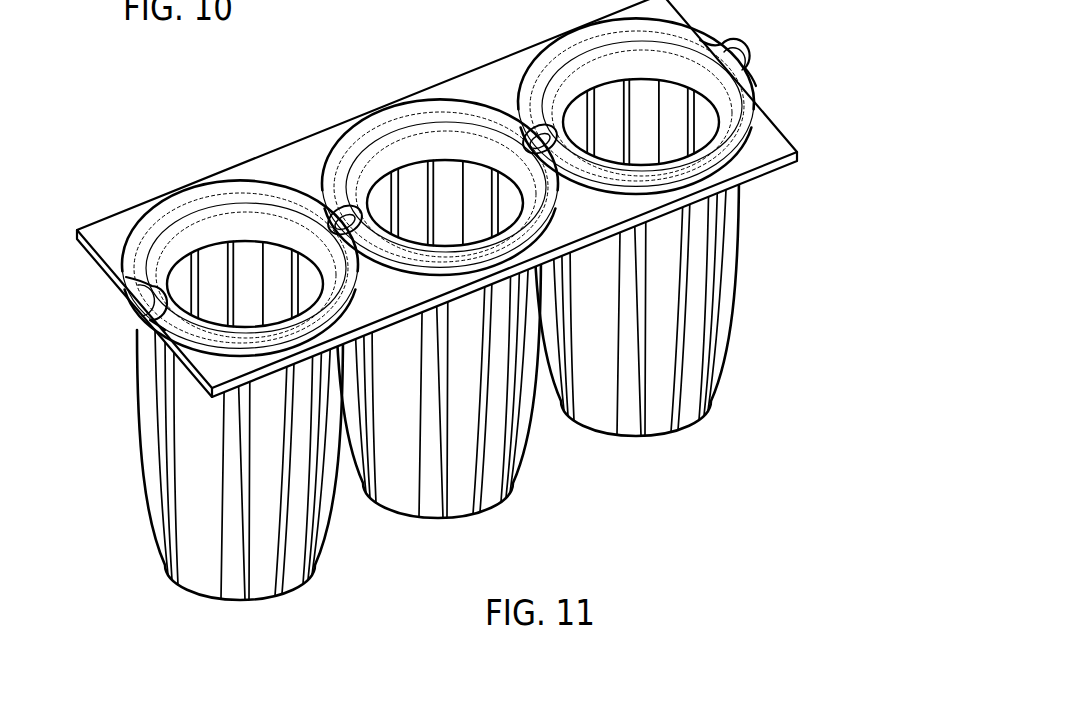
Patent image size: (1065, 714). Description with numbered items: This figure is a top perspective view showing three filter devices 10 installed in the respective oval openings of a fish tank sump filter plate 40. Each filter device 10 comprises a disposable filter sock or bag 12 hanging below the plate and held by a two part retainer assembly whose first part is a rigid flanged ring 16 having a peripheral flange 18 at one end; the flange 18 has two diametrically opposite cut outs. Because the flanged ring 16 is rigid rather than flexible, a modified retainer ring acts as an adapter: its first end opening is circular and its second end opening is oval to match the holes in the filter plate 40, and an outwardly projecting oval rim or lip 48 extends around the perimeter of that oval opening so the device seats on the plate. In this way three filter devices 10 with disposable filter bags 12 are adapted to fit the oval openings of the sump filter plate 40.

The filter device 10 is at (672, 0).
The filter sock or bag 12 is at (310, 542).
The flanged ring 16 is at (337, 170).
The peripheral flange 18 is at (160, 207).
The sump filter plate 40 is at (770, 147).
The rim or lip 48 is at (127, 285).